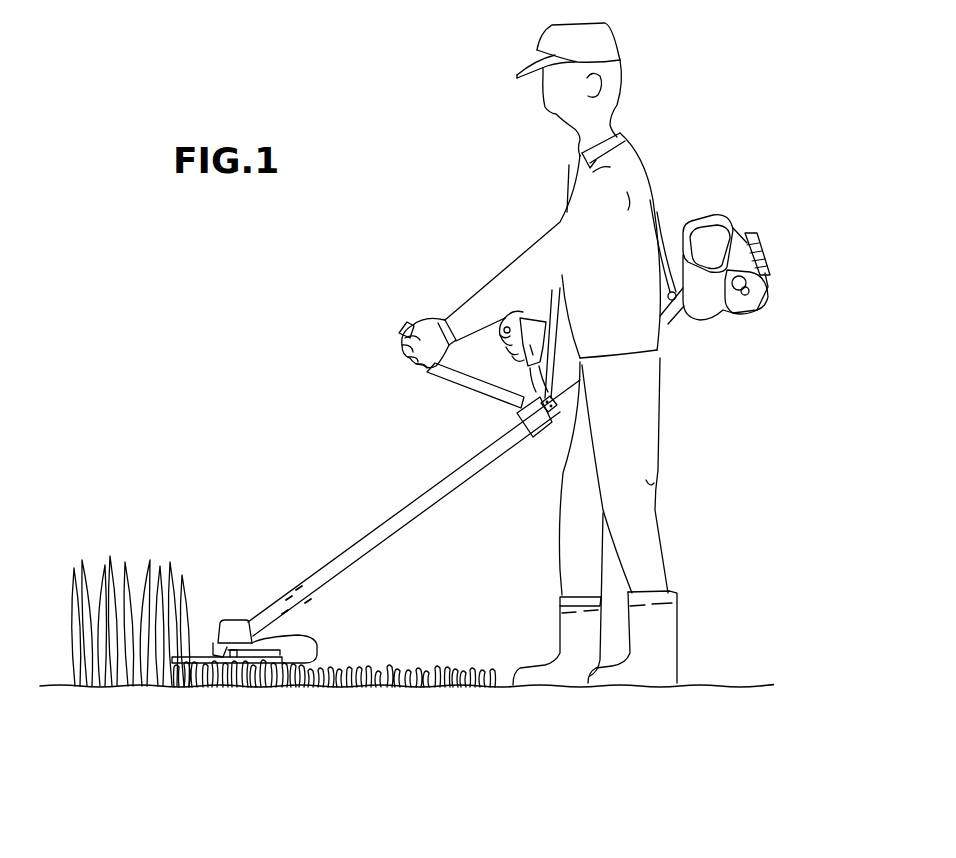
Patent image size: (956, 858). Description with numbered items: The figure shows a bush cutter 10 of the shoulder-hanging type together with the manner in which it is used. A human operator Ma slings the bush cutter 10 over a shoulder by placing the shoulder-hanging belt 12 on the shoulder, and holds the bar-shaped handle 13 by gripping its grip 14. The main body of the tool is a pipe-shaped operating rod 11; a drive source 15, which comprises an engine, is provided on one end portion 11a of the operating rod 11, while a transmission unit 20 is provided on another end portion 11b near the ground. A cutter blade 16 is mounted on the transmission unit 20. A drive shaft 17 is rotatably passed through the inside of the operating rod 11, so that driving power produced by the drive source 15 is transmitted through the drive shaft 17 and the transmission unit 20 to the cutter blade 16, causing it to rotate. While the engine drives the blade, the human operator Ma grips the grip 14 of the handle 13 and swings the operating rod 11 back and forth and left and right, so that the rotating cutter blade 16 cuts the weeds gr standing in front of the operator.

The human operator Ma is at (498, 111).
The bush cutter 10 is at (760, 170).
The pipe-shaped operating rod 11 is at (290, 593).
The one end portion of operating rod 11a is at (666, 328).
The another end portion of operating rod 11b is at (258, 618).
The shoulder-hanging belt 12 is at (546, 297).
The bar-shaped handle 13 is at (462, 387).
The grip 14 is at (399, 333).
The drive source 15 is at (752, 300).
The cutter blade 16 is at (190, 645).
The drive shaft 17 is at (312, 595).
The transmission unit 20 is at (215, 686).
The weeds gr is at (125, 552).